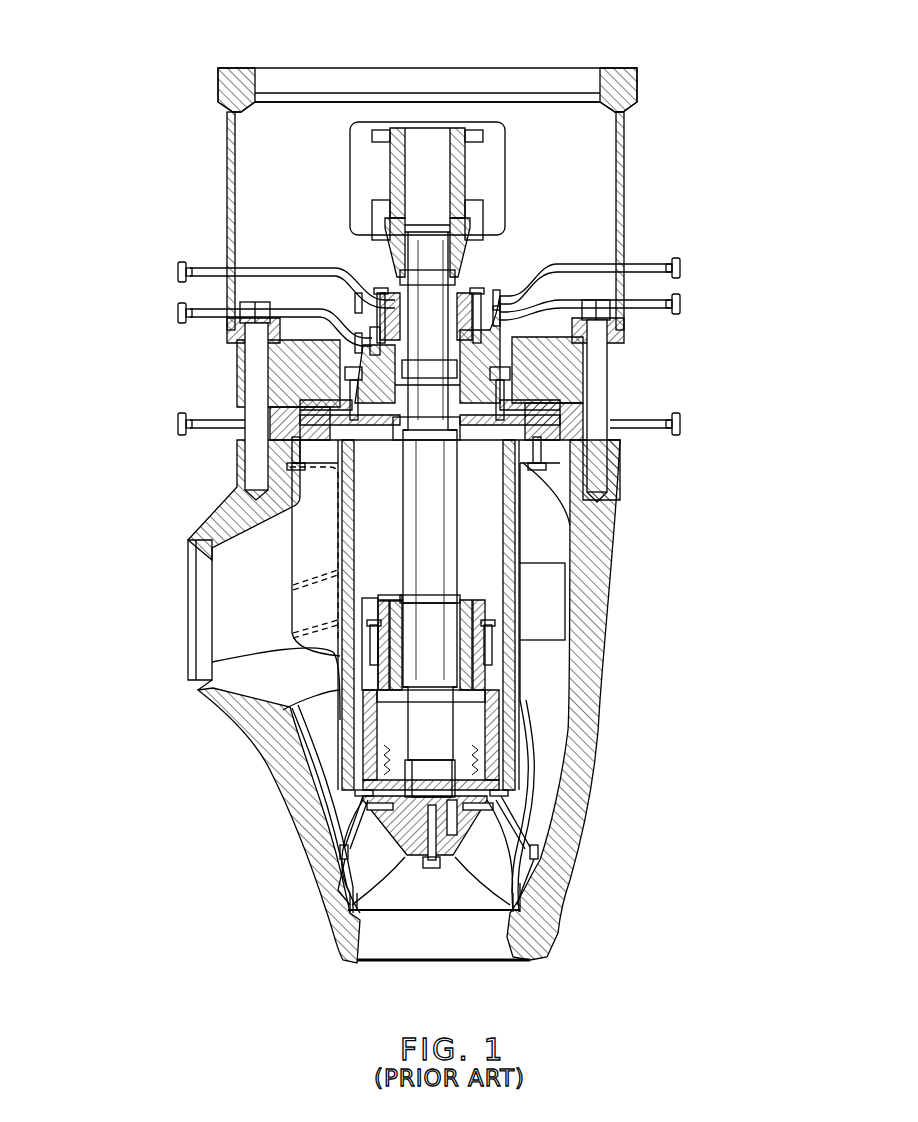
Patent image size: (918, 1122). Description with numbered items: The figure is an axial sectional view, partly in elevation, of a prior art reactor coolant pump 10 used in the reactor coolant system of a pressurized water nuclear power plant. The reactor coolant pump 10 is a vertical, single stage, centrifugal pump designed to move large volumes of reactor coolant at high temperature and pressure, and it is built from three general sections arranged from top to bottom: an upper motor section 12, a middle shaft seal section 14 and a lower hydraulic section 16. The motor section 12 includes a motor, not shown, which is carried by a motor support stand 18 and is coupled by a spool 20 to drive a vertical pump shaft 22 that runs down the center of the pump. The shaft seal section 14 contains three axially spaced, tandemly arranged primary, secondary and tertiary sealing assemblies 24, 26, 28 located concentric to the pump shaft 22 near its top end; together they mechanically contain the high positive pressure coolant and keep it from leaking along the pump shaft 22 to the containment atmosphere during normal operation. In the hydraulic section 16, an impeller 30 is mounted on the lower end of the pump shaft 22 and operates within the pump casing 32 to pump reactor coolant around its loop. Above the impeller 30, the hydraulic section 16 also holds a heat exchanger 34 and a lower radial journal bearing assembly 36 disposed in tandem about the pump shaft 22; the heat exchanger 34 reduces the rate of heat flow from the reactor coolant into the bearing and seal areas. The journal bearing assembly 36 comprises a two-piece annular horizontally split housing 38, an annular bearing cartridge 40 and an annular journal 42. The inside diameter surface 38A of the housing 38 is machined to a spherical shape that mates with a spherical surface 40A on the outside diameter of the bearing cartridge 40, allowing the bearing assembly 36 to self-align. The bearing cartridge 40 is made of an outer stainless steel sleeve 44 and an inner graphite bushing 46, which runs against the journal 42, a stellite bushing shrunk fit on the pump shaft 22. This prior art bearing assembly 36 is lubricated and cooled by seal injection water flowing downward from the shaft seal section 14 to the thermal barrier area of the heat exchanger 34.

The reactor coolant pump 10 is at (198, 46).
The motor section 12 is at (547, 220).
The shaft seal section 14 is at (524, 372).
The hydraulic section 16 is at (304, 672).
The motor support stand 18 is at (392, 153).
The spool 20 is at (397, 263).
The pump shaft 22 is at (435, 498).
The primary sealing assembly 24 is at (334, 404).
The secondary sealing assembly 26 is at (356, 355).
The tertiary sealing assembly 28 is at (364, 282).
The impeller 30 is at (363, 857).
The pump casing 32 is at (590, 768).
The heat exchanger 34 is at (506, 734).
The journal bearing assembly 36 is at (487, 637).
The housing 38 is at (375, 652).
The inside diameter surface 38A is at (377, 640).
The bearing cartridge 40 is at (498, 618).
The spherical surface 40A is at (483, 648).
The journal 42 is at (478, 613).
The outer stainless steel sleeve 44 is at (380, 635).
The inner graphite bushing 46 is at (380, 613).